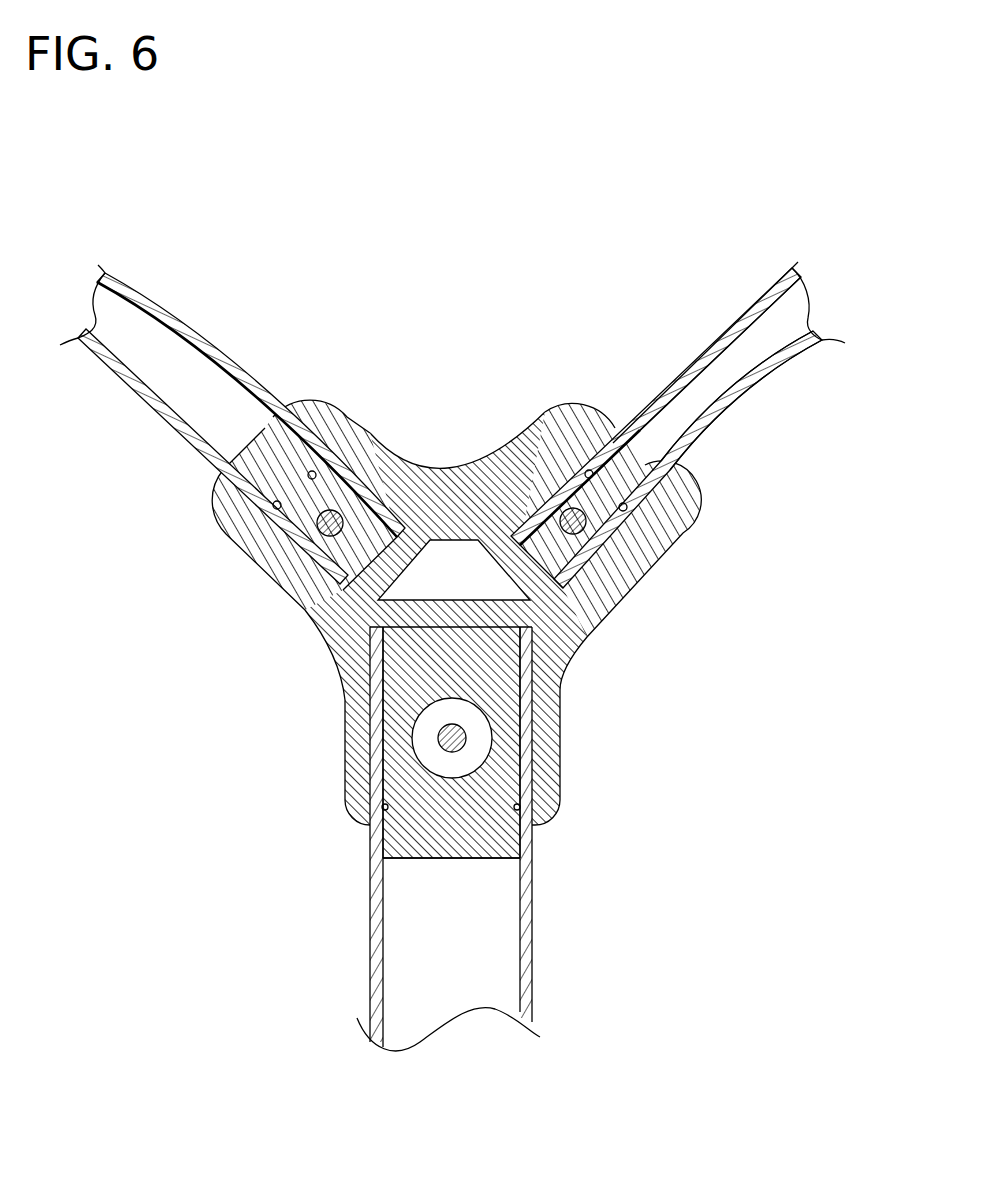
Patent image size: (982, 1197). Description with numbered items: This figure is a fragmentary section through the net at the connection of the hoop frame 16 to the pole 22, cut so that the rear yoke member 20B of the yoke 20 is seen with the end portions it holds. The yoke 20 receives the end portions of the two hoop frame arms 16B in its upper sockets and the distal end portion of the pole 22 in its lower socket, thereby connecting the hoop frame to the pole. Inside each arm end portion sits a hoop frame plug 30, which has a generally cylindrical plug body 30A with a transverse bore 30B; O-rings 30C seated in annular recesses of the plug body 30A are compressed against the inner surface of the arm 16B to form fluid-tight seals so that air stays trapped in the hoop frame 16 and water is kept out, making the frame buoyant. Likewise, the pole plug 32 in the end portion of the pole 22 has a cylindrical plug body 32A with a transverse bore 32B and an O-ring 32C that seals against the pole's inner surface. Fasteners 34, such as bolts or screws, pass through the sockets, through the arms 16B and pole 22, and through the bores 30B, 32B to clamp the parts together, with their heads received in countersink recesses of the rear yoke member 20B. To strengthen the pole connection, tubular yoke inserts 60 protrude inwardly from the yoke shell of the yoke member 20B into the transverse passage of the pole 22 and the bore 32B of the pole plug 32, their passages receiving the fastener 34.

The hoop frame 16 is at (725, 322).
The hoop frame arms 16B is at (203, 355).
The yoke 20 is at (551, 328).
The rear yoke member 20B is at (425, 465).
The pole 22 is at (535, 960).
The hoop frame plugs 30 is at (220, 500).
The plug body 30A is at (300, 603).
The transverse bore 30B is at (330, 565).
The O-rings 30C is at (262, 507).
The pole plug 32 is at (548, 727).
The plug body 32A is at (500, 680).
The transverse bore 32B is at (405, 720).
The O-ring 32C is at (493, 857).
The fasteners 34 is at (345, 500).
The yoke inserts 60 is at (495, 755).